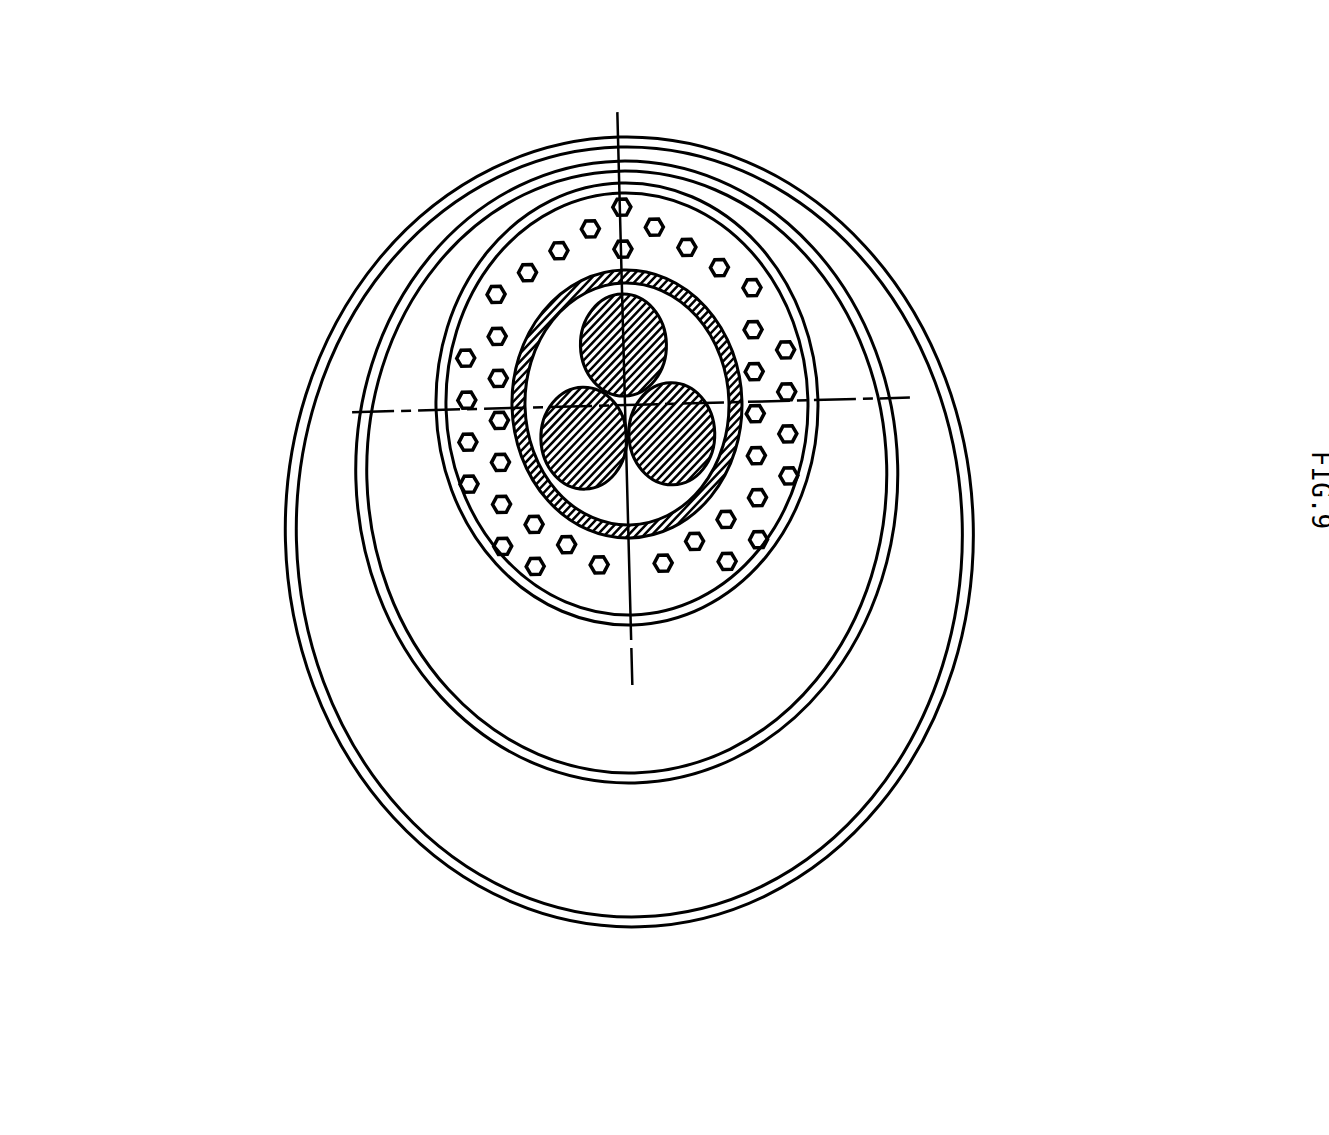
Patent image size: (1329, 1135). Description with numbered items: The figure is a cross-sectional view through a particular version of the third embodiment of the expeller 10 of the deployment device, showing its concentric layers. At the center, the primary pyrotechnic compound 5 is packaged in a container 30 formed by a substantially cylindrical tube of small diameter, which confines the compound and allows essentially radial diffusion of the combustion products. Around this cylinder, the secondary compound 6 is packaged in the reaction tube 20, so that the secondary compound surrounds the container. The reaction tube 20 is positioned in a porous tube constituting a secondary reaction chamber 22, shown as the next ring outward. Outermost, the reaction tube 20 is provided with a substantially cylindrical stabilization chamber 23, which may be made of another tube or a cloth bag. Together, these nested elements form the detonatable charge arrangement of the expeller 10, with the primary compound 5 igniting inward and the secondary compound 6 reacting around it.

The primary pyrotechnic compound 5 is at (618, 346).
The secondary compound 6 is at (768, 458).
The expeller 10 is at (263, 265).
The reaction tube 20 is at (803, 368).
The secondary reaction chamber 22 is at (356, 508).
The stabilization chamber 23 is at (352, 757).
The container 30 is at (510, 377).